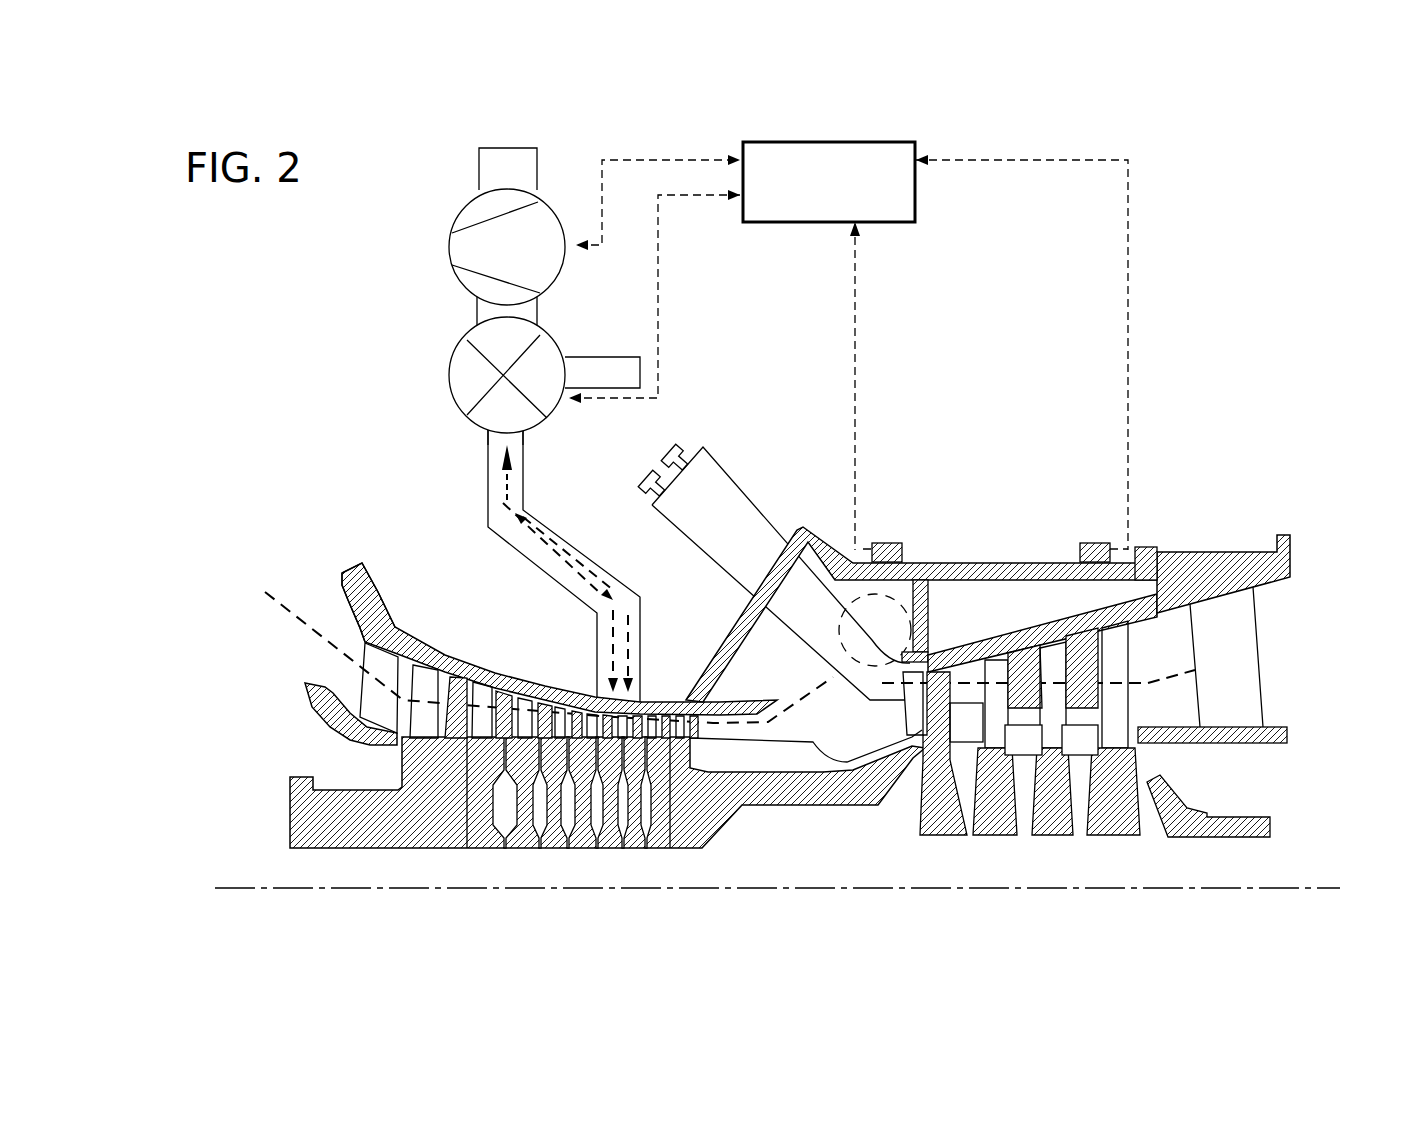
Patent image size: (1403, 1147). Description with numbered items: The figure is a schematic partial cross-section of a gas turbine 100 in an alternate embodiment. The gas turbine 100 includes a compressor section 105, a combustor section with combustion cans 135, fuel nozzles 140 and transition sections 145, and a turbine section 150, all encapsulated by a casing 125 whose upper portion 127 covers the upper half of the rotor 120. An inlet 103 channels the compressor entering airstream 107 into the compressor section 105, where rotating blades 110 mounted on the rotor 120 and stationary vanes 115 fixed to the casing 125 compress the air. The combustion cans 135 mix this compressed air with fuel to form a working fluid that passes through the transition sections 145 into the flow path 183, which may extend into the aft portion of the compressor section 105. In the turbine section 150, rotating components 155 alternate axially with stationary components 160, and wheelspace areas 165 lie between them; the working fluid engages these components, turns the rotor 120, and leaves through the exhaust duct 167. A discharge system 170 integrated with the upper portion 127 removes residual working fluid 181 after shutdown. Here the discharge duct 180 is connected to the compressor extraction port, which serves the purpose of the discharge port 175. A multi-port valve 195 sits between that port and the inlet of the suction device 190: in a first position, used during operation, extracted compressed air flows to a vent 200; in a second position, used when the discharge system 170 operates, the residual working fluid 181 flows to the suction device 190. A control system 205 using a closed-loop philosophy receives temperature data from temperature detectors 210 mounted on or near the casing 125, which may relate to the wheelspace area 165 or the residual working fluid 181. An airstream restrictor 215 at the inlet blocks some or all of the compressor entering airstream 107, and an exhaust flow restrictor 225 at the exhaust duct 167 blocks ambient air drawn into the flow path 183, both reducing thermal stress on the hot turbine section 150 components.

The gas turbine 100 is at (1105, 155).
The inlet 103 is at (312, 605).
The compressor section 105 is at (580, 863).
The compressor entering airstream 107 is at (576, 550).
The rotating blades 110 is at (483, 690).
The stationary vanes 115 is at (513, 678).
The rotor 120 is at (235, 890).
The casing 125 is at (830, 520).
The upper portion 127 is at (812, 525).
The combustion cans 135 is at (693, 523).
The fuel nozzles 140 is at (634, 455).
The transition sections 145 is at (789, 610).
The turbine section 150 is at (912, 828).
The rotating components 155 is at (945, 672).
The stationary components 160 is at (1020, 670).
The wheelspace area 165 is at (1008, 752).
The exhaust duct 167 is at (1215, 552).
The discharge system 170 is at (418, 428).
The discharge port 175 is at (720, 620).
The discharge duct 180 is at (487, 490).
The residual working fluid 181 is at (505, 487).
The flow path 183 is at (1065, 752).
The suction device 190 is at (450, 240).
The multi-port valve 195 is at (452, 352).
The vent 200 is at (578, 357).
The control system 205 is at (808, 196).
The temperature detector 210 is at (892, 541).
The airstream restrictor 215 is at (343, 678).
The exhaust flow restrictor 225 is at (1263, 660).